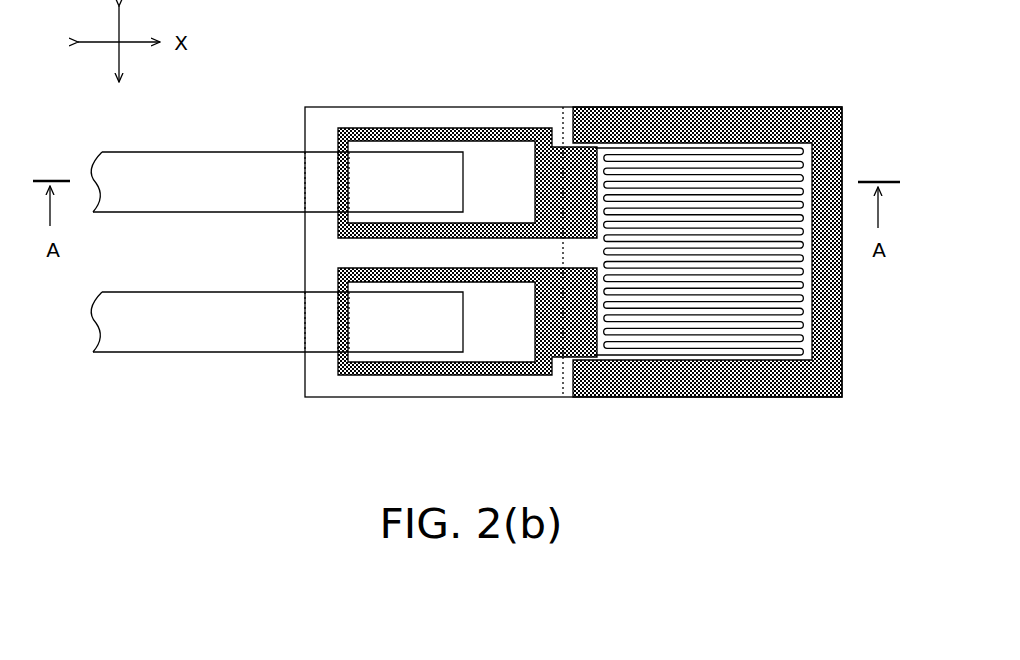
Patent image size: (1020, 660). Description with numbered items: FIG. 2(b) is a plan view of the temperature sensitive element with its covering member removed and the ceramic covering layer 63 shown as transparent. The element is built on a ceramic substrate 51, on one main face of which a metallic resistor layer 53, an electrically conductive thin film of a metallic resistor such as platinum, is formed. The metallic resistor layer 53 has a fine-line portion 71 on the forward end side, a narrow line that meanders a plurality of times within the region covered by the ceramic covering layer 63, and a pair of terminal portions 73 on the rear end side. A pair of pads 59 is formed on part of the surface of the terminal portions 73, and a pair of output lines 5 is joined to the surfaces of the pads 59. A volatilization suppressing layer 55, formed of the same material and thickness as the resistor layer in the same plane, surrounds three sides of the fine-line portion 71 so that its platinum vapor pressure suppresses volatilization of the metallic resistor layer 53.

The output lines 5 is at (233, 177).
The ceramic substrate 51 is at (531, 118).
The metallic resistor layer 53 is at (703, 358).
The volatilization suppressing layer 55 is at (715, 108).
The pads 59 is at (487, 167).
The ceramic covering layer 63 is at (566, 92).
The fine-line portion 71 is at (765, 360).
The terminal portions 73 is at (425, 133).